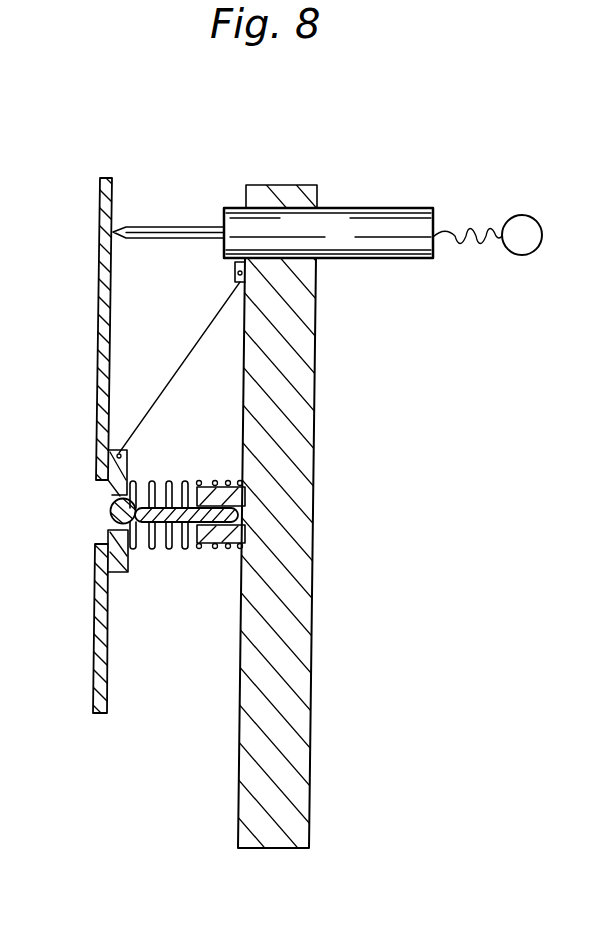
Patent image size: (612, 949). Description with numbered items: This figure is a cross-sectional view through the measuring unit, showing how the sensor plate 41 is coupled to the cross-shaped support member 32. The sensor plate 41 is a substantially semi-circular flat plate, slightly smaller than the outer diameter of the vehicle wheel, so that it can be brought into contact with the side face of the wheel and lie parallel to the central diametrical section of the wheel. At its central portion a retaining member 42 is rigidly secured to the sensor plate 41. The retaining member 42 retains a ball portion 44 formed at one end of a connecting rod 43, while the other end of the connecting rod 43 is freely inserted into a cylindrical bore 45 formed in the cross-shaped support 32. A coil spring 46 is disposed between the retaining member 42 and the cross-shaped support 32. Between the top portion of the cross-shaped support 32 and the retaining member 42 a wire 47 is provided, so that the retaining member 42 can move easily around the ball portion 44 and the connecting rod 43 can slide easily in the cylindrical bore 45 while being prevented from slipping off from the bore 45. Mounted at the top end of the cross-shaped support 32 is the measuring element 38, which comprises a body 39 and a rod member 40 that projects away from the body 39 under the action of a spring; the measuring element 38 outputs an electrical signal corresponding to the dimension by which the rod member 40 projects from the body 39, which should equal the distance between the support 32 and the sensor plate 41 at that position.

The cross-shaped support member 32 is at (309, 768).
The measuring element 38 is at (436, 204).
The body 39 is at (358, 208).
The rod member 40 is at (172, 227).
The sensor plate 41 is at (105, 178).
The retaining member 42 is at (116, 575).
The connecting rod 43 is at (172, 550).
The ball portion 44 is at (110, 518).
The cylindrical bore 45 is at (225, 550).
The coil spring 46 is at (171, 482).
The wire 47 is at (202, 330).